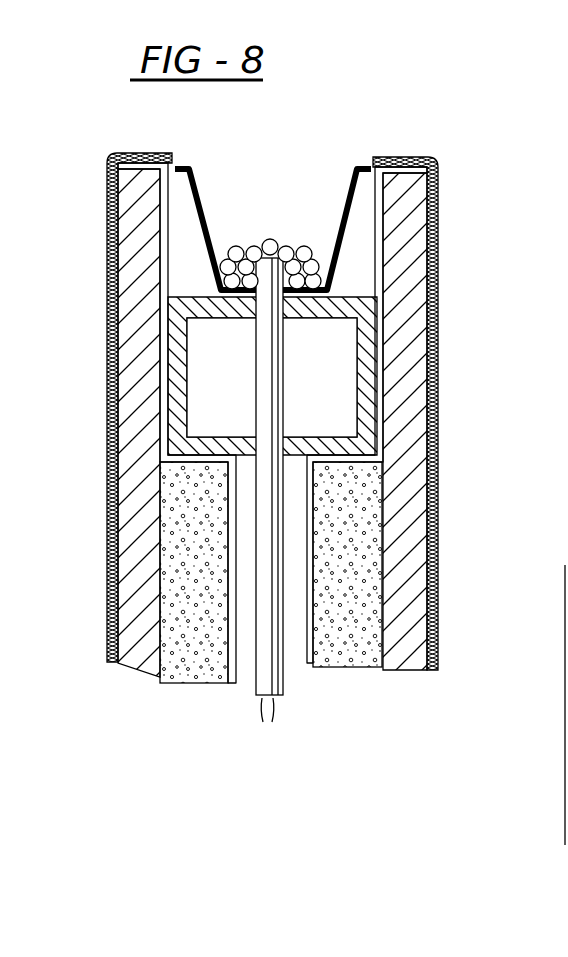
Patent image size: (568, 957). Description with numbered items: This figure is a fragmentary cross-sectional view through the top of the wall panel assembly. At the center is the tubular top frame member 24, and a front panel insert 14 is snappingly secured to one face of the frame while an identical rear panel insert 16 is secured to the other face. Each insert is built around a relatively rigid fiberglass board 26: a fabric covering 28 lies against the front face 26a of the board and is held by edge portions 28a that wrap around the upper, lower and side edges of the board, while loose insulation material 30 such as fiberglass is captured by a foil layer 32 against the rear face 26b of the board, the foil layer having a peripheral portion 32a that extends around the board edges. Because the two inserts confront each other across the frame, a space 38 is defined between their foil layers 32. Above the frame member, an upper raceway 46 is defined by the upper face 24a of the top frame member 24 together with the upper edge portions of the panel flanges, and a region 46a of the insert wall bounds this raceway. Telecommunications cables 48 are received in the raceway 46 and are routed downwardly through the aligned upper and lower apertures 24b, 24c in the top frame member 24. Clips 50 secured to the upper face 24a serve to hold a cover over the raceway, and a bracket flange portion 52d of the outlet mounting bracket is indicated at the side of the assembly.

The front panel insert 14 is at (458, 212).
The rear panel insert 16 is at (104, 180).
The top frame member 24 is at (384, 370).
The upper face of upper frame member 24a is at (348, 292).
The upper aperture in upper frame member 24b is at (246, 305).
The lower aperture in upper frame member 24c is at (243, 440).
The rigid fiberglass board 26 is at (401, 452).
The front face of the board 26a is at (413, 597).
The rear face of the board 26b is at (385, 530).
The fabric covering 28 is at (437, 487).
The edge portions of fabric covering 28a is at (150, 153).
The loose insulation material 30 is at (188, 665).
The foil layer 32 is at (230, 600).
The peripheral portion of foil layer 32a is at (352, 300).
The space 38 is at (297, 664).
The upper raceway 46 is at (192, 273).
The mesh side portion 46a is at (95, 402).
The telecommunications cables 48 is at (268, 245).
The clips 50 is at (207, 225).
The bracket flange portion 52d is at (532, 705).